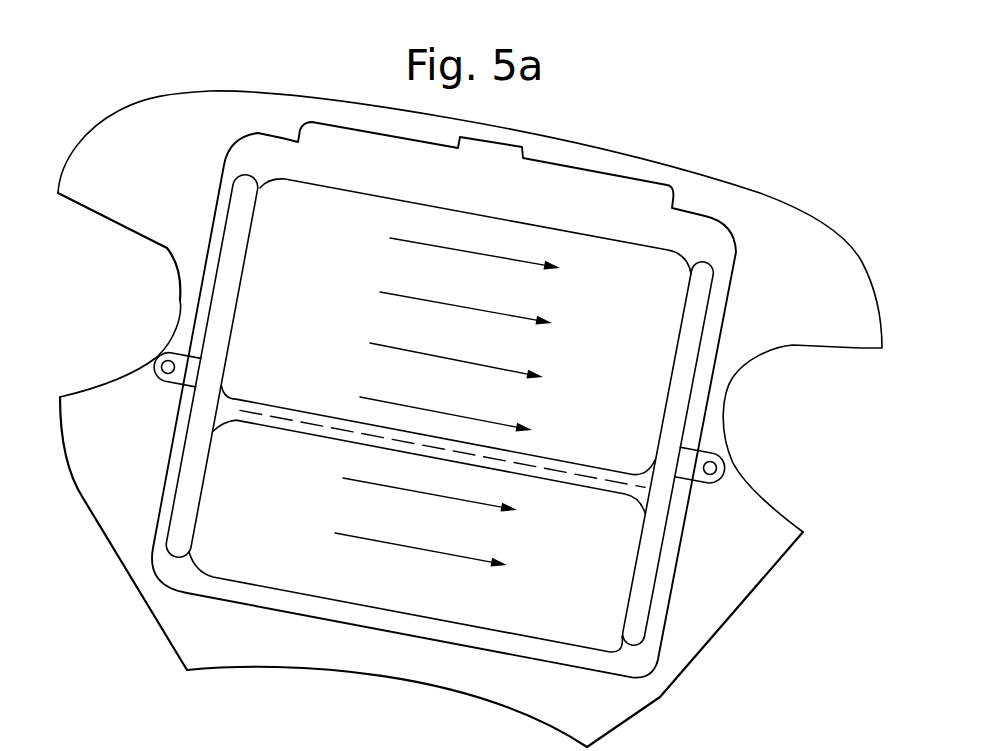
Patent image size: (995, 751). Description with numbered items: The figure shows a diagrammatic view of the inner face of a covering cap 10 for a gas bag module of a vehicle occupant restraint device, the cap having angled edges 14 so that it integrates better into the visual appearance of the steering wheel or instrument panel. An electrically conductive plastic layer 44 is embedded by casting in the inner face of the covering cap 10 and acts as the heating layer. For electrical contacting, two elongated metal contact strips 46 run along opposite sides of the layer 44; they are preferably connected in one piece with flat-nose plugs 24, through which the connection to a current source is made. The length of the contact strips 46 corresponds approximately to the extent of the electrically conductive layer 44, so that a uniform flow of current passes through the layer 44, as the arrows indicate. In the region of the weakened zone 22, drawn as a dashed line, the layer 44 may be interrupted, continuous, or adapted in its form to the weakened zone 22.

The covering cap 10 is at (294, 79).
The edges 14 is at (797, 317).
The weakened zone 22 is at (565, 470).
The flat-nose plugs 24 is at (157, 360).
The electrically conductive plastic layer 44 is at (609, 258).
The contact strips 46 is at (217, 298).